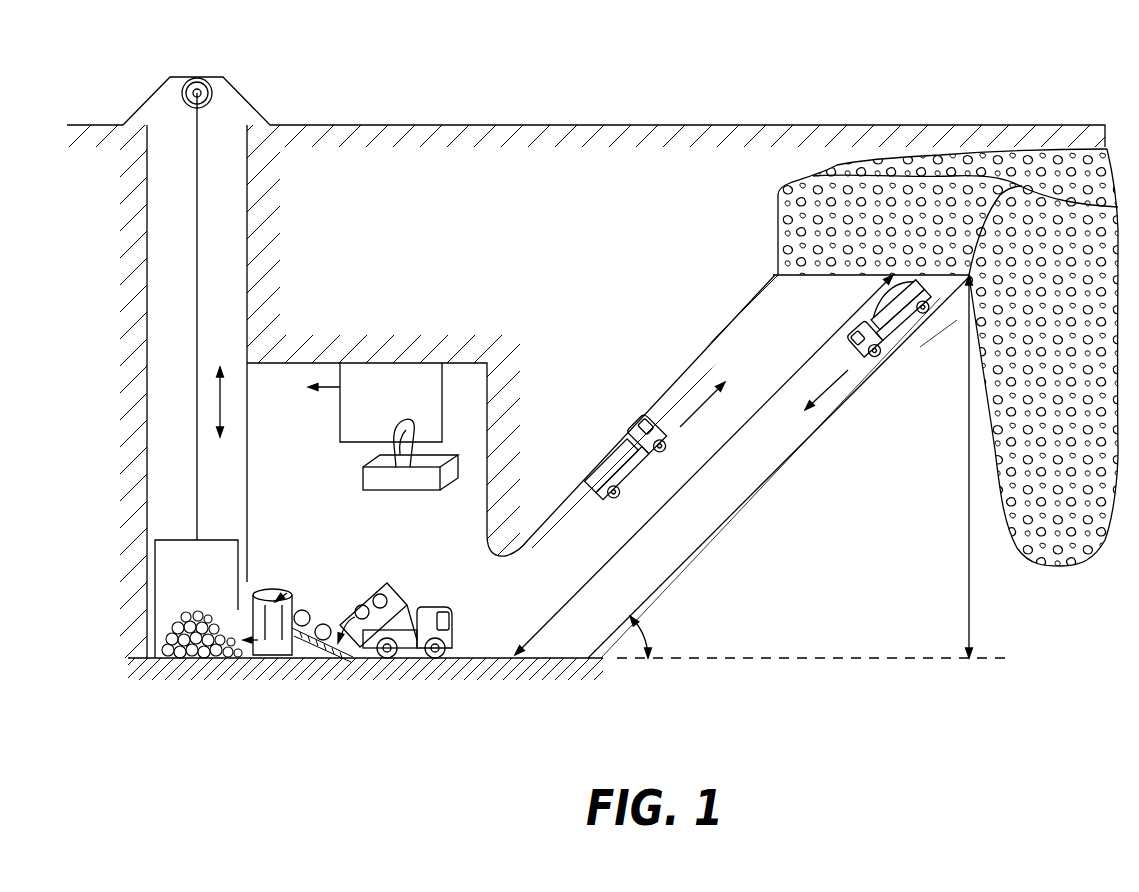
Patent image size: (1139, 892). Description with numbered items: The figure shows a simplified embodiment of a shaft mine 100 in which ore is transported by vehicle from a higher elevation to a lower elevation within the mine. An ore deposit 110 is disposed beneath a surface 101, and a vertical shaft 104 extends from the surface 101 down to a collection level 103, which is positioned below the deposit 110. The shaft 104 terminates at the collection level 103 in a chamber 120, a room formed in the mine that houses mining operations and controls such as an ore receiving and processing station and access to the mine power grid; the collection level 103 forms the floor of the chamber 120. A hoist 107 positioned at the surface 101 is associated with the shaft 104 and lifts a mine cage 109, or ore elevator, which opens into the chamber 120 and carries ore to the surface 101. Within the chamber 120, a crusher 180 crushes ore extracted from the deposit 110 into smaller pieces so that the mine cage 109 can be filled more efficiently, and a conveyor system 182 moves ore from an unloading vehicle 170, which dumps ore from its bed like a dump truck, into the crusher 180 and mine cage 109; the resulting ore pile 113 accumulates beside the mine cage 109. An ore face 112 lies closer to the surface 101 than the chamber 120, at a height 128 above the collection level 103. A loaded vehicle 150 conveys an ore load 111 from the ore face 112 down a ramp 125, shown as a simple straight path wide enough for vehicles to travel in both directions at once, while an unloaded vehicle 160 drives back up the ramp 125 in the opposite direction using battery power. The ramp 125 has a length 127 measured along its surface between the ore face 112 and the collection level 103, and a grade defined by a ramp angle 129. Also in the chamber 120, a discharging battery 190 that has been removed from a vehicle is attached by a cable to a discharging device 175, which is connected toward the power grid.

The shaft mine 100 is at (849, 66).
The surface 101 is at (607, 125).
The collection level 103 is at (573, 653).
The vertical shaft 104 is at (223, 237).
The hoist 107 is at (250, 98).
The mine cage 109 is at (238, 548).
The ore deposit 110 is at (1060, 566).
The ore load 111 is at (922, 325).
The ore face 112 is at (861, 221).
The ore pile 113 is at (202, 658).
The chamber 120 is at (357, 550).
The ramp 125 is at (758, 302).
The length 127 is at (706, 473).
The height 128 is at (965, 592).
The ramp angle 129 is at (652, 652).
The loaded vehicle 150 is at (910, 287).
The unloaded vehicle 160 is at (660, 426).
The unloading vehicle 170 is at (427, 610).
The discharging device 175 is at (362, 422).
The crusher 180 is at (277, 655).
The conveyor system 182 is at (322, 660).
The discharging battery 190 is at (417, 480).